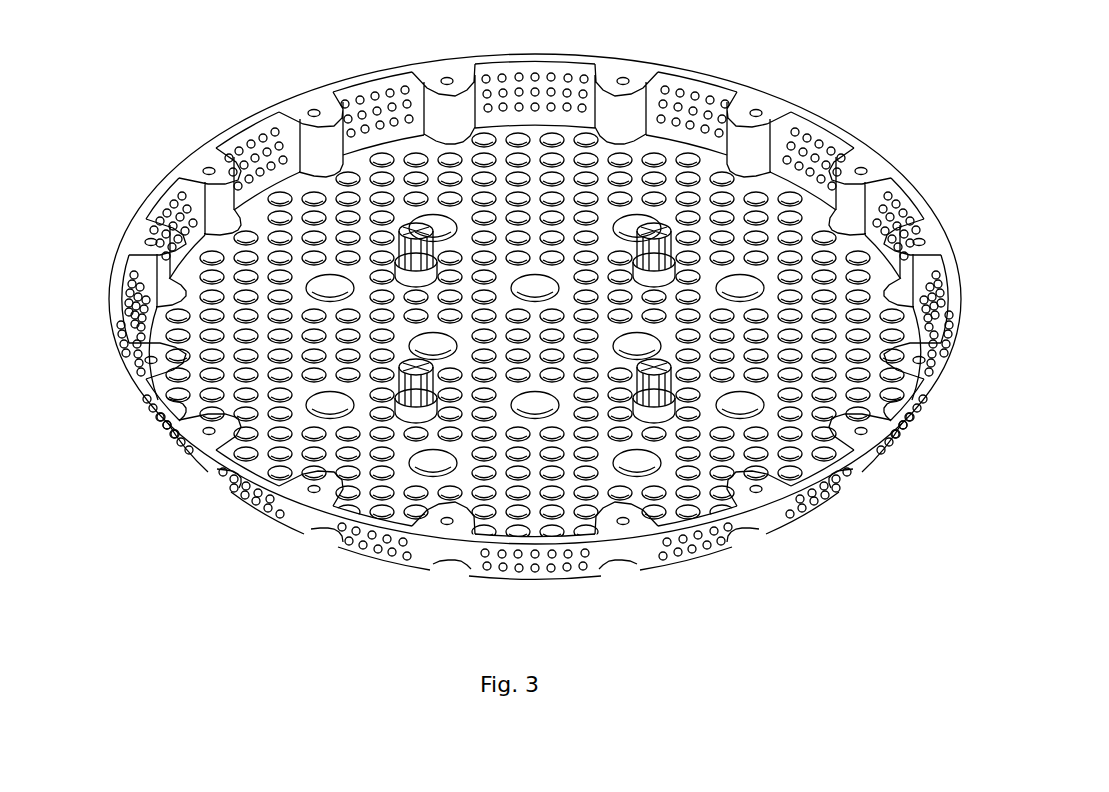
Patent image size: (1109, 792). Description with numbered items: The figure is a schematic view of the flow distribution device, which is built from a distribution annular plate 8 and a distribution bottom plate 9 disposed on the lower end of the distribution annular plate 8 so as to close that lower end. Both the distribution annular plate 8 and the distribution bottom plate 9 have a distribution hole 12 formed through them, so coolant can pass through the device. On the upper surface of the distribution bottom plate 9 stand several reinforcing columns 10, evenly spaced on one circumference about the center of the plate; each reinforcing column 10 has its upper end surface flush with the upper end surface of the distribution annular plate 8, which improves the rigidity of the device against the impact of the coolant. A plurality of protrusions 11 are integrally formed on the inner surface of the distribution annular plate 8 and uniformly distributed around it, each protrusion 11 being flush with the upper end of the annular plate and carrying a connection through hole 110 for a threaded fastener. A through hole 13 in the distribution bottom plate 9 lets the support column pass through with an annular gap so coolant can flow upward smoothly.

The distribution annular plate 8 is at (125, 257).
The distribution bottom plate 9 is at (217, 237).
The reinforcing column 10 is at (393, 402).
The protrusion 11 is at (170, 250).
The distribution hole 12 is at (235, 180).
The through hole 13 is at (340, 395).
The connection through hole 110 is at (618, 527).